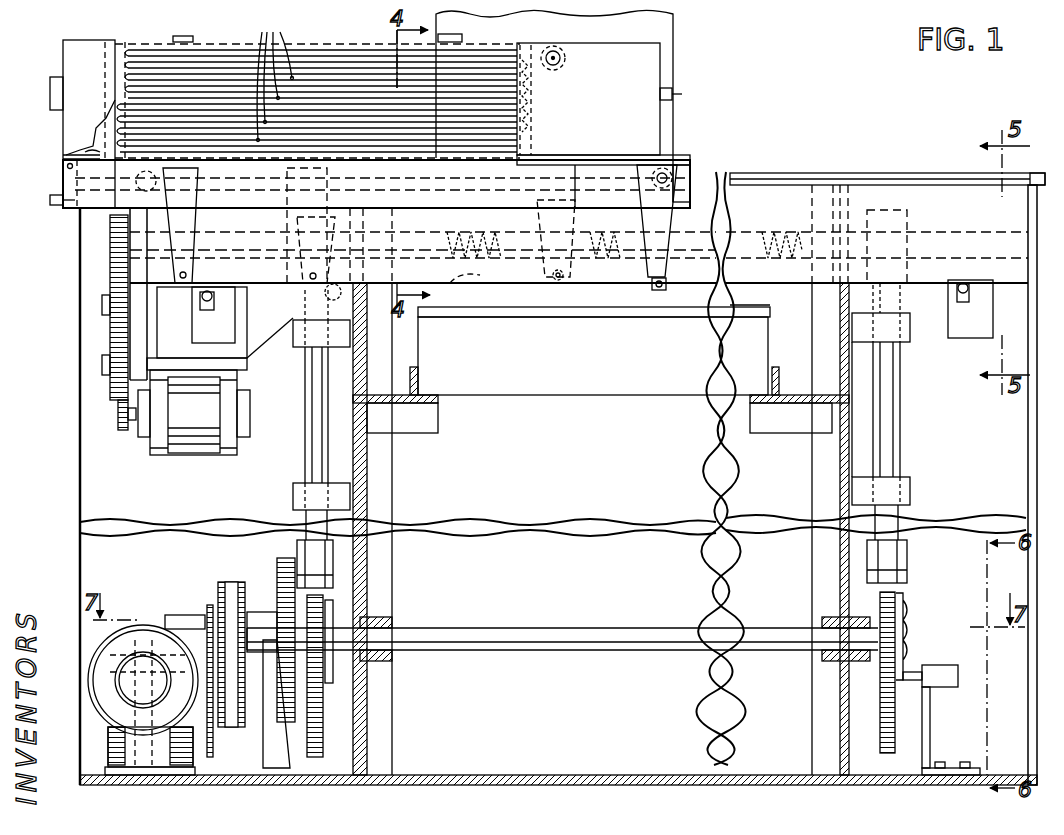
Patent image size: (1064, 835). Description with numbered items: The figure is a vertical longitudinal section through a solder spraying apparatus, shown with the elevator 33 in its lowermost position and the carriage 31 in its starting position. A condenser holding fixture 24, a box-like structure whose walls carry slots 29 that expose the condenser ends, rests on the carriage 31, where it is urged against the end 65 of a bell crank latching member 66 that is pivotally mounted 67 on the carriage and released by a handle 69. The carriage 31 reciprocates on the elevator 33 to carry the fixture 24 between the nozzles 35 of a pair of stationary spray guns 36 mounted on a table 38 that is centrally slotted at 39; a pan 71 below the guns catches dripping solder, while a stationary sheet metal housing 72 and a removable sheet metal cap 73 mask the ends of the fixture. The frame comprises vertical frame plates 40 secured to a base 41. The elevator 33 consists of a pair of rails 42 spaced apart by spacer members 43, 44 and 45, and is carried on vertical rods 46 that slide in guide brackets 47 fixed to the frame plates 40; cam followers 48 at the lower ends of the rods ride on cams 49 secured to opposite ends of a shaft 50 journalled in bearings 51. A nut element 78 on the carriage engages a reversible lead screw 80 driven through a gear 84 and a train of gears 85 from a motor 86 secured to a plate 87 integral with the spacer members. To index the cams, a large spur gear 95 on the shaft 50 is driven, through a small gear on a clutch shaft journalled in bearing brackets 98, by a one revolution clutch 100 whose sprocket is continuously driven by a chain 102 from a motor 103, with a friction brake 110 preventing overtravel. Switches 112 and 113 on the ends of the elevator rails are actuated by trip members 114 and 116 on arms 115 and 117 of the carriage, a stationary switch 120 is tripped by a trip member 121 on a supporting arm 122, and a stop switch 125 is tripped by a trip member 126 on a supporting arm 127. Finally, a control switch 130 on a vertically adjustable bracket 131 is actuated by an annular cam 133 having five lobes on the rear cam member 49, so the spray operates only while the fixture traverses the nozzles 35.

The fixture 24 is at (218, 38).
The slots 29 is at (275, 72).
The carriage 31 is at (96, 209).
The elevator 33 is at (484, 290).
The nozzles 35 is at (561, 52).
The spray guns 36 is at (673, 14).
The table 38 is at (760, 173).
The slot 39 is at (795, 184).
The vertical frame plates 40 is at (392, 553).
The base 41 is at (608, 775).
The rails 42 is at (776, 281).
The spacer member 43 is at (140, 333).
The spacer member 44 is at (296, 322).
The spacer member 45 is at (908, 282).
The vertical rods 46 is at (311, 448).
The guide brackets 47 is at (296, 345).
The cam followers 48 is at (317, 572).
The cams 49 is at (330, 708).
The shaft 50 is at (581, 640).
The bearings 51 is at (374, 620).
The end 65 is at (100, 152).
The bell crank latching member 66 is at (66, 157).
The pivot 67 is at (67, 166).
The handle 69 is at (56, 195).
The pan 71 is at (568, 385).
The sheet metal housing 72 is at (660, 60).
The sheet metal cap 73 is at (64, 45).
The nut element 78 is at (462, 283).
The reversible lead screw 80 is at (246, 250).
The gear 84 is at (117, 230).
The train of gears 85 is at (100, 318).
The motor 86 is at (180, 456).
The plate 87 is at (237, 364).
The spur gear 95 is at (285, 592).
The bearing brackets 98 is at (272, 762).
The one revolution clutch 100 is at (180, 612).
The chain 102 is at (217, 720).
The motor 103 is at (130, 630).
The friction brake 110 is at (233, 586).
The switch 112 is at (203, 318).
The switch 113 is at (966, 292).
The trip member 114 is at (183, 288).
The arm 115 is at (182, 225).
The trip member 116 is at (655, 287).
The arm 117 is at (665, 217).
The switch 120 is at (900, 297).
The trip member 121 is at (566, 273).
The supporting arm 122 is at (577, 217).
The stop switch 125 is at (300, 304).
The trip member 126 is at (304, 280).
The supporting arm 127 is at (298, 218).
The control switch 130 is at (950, 673).
The bracket 131 is at (931, 723).
The annular cam 133 is at (904, 633).